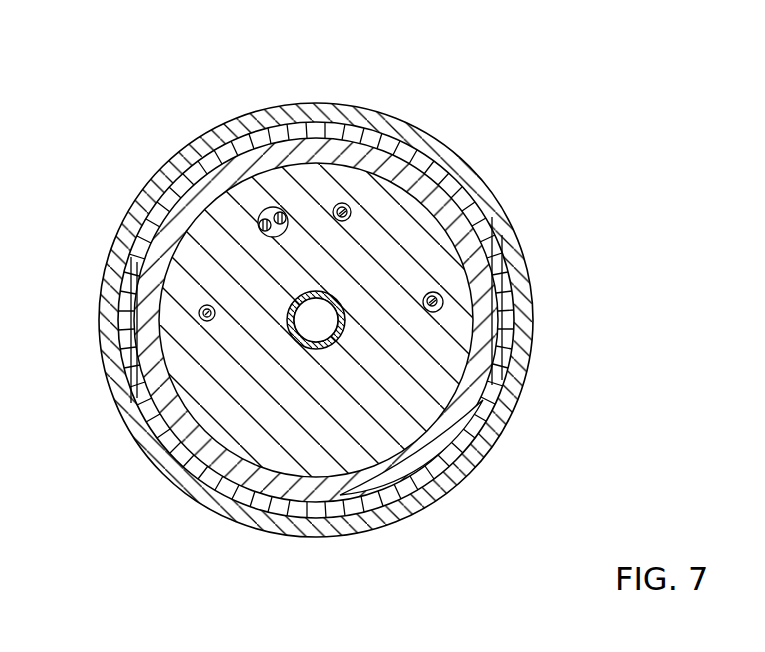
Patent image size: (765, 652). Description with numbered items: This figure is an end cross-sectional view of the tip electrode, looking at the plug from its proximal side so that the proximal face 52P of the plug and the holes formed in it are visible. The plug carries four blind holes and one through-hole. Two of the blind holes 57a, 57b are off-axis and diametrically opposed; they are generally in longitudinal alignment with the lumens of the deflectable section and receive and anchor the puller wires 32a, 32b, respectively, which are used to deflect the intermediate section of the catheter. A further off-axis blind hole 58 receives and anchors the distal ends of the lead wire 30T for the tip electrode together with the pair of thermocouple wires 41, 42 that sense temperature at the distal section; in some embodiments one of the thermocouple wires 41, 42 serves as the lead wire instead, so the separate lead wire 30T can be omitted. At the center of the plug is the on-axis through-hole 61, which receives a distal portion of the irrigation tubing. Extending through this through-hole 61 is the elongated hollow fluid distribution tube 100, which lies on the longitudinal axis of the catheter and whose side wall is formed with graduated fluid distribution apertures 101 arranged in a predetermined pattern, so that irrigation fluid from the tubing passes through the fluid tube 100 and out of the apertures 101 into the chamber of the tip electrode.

The lead wire 30T is at (410, 146).
The through-hole 61 is at (373, 470).
The proximal face 52P is at (438, 406).
The fluid distribution tube 100 is at (345, 293).
The fluid distribution apertures 101 is at (316, 321).
The blind hole 58 is at (259, 216).
The thermocouple wire 41 is at (263, 219).
The thermocouple wire 42 is at (281, 212).
The blind hole 57a is at (199, 316).
The blind hole 57b is at (442, 301).
The puller wire 32a is at (203, 320).
The puller wire 32b is at (443, 310).